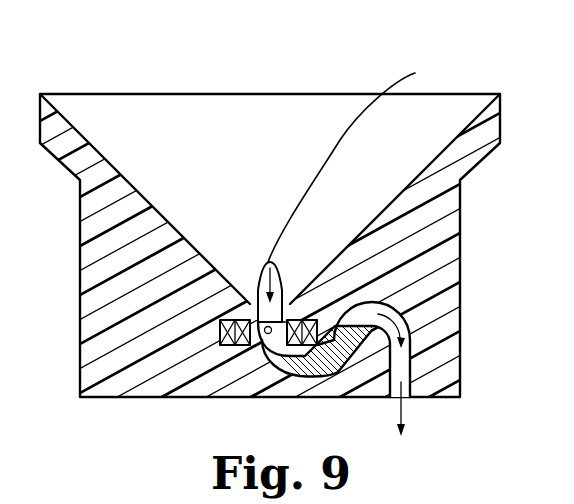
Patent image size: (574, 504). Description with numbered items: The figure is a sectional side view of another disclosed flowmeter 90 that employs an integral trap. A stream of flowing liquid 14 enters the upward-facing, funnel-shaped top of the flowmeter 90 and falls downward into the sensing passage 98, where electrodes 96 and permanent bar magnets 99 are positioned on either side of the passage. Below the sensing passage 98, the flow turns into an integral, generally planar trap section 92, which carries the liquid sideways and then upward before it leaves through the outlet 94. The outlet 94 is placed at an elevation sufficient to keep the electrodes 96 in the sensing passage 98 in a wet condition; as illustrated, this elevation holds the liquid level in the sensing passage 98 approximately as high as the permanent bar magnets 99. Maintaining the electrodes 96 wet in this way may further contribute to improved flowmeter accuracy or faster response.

The flowmeter 90 is at (468, 62).
The stream of flowing liquid 14 is at (380, 93).
The trap section 92 is at (302, 368).
The outlet 94 is at (373, 378).
The electrodes 96 is at (288, 320).
The sensing passage 98 is at (265, 362).
The permanent bar magnets 99 is at (228, 320).